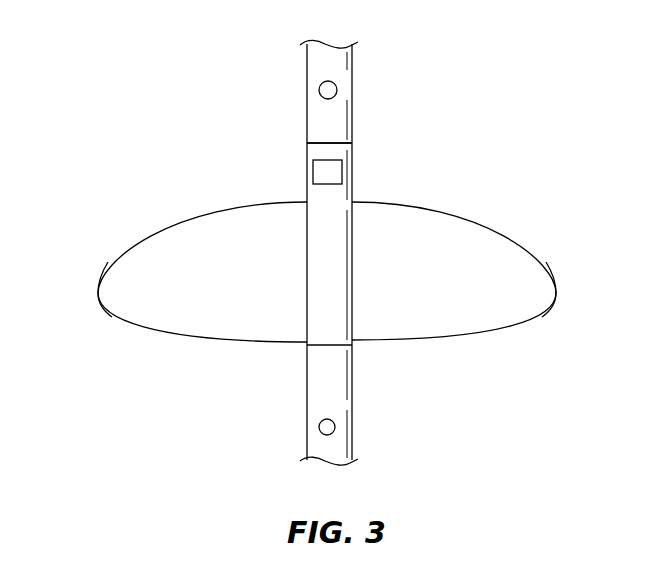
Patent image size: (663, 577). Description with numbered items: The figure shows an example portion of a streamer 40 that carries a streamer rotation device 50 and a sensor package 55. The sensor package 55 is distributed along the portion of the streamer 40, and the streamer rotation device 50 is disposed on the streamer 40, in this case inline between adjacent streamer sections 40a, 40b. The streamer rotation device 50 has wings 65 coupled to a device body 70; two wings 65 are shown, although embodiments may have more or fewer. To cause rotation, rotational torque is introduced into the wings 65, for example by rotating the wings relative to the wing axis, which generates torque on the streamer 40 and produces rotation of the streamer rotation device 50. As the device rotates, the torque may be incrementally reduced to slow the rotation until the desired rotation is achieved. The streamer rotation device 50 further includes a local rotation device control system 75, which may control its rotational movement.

The streamer 40 is at (307, 112).
The streamer section 40a is at (307, 62).
The streamer section 40b is at (348, 358).
The sensor package 55 is at (337, 90).
The device body 70 is at (350, 153).
The local rotation device control system 75 is at (313, 170).
The streamer rotation device 50 is at (495, 218).
The wings 65 is at (103, 272).